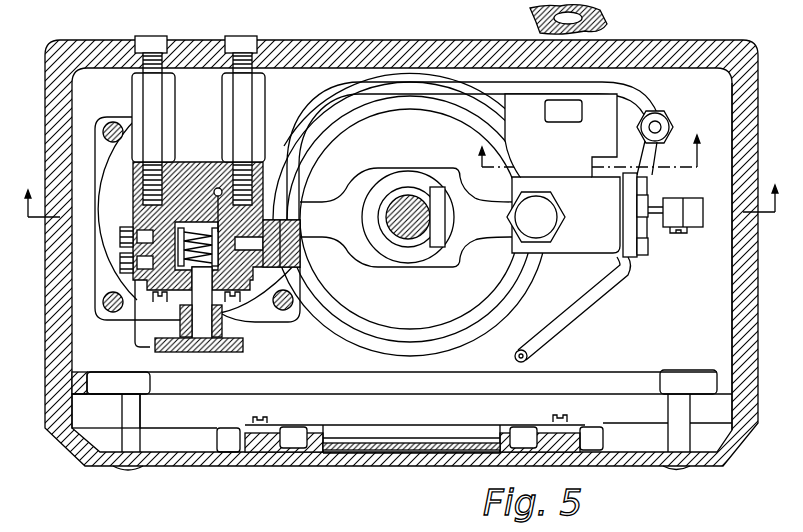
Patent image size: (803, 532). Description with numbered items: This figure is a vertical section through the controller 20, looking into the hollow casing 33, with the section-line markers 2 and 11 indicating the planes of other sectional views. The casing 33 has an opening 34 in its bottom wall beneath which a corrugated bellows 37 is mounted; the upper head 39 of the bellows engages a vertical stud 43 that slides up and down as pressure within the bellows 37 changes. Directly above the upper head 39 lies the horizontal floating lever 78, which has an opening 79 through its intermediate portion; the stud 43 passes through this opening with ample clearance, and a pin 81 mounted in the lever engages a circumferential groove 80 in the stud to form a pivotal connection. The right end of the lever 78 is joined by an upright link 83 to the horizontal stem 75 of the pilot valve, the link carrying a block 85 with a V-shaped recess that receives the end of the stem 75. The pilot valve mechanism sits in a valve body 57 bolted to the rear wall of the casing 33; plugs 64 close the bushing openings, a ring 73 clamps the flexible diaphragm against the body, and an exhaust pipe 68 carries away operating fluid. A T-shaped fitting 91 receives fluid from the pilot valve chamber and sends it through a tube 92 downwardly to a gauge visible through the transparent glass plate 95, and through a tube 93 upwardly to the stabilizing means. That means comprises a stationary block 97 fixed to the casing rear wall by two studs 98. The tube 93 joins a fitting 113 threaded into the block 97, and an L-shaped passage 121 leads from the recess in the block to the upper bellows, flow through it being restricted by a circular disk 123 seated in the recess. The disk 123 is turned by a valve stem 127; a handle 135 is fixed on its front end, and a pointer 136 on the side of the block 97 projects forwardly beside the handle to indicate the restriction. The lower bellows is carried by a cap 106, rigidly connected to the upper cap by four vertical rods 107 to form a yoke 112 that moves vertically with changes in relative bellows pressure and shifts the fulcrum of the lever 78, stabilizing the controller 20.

The controller 20 is at (660, 493).
The casing 33 is at (752, 330).
The yoke 112 is at (91, 126).
The studs 98 is at (238, 97).
The stationary block 97 is at (200, 173).
The L-shaped passage 121 is at (173, 200).
The circular disk 123 is at (215, 220).
The fitting 113 is at (300, 247).
The pointer 136 is at (130, 342).
The valve stem 127 is at (198, 342).
The handle 135 is at (219, 347).
The lower cap 106 is at (263, 311).
The vertical rods 107 is at (293, 318).
The floating lever 78 is at (328, 206).
The opening 79 is at (369, 225).
The circumferential groove 80 is at (406, 188).
The vertical stud 43 is at (411, 229).
The pin 81 is at (440, 222).
The upper head 39 is at (410, 219).
The bellows 37 is at (537, 268).
The opening 34 is at (543, 293).
The tube 93 is at (404, 86).
The T-shaped fitting 91 is at (667, 113).
The valve body 57 is at (562, 173).
The plugs 64 is at (536, 217).
The ring 73 is at (632, 246).
The pilot valve stem 75 is at (662, 210).
The block 85 is at (707, 209).
The upright link 83 is at (688, 229).
The tube 92 is at (593, 304).
The transparent glass plate 95 is at (423, 451).
The exhaust pipe 68 is at (537, 23).
The section line 2- 2 is at (400, 190).
The section line 11- 11 is at (589, 141).